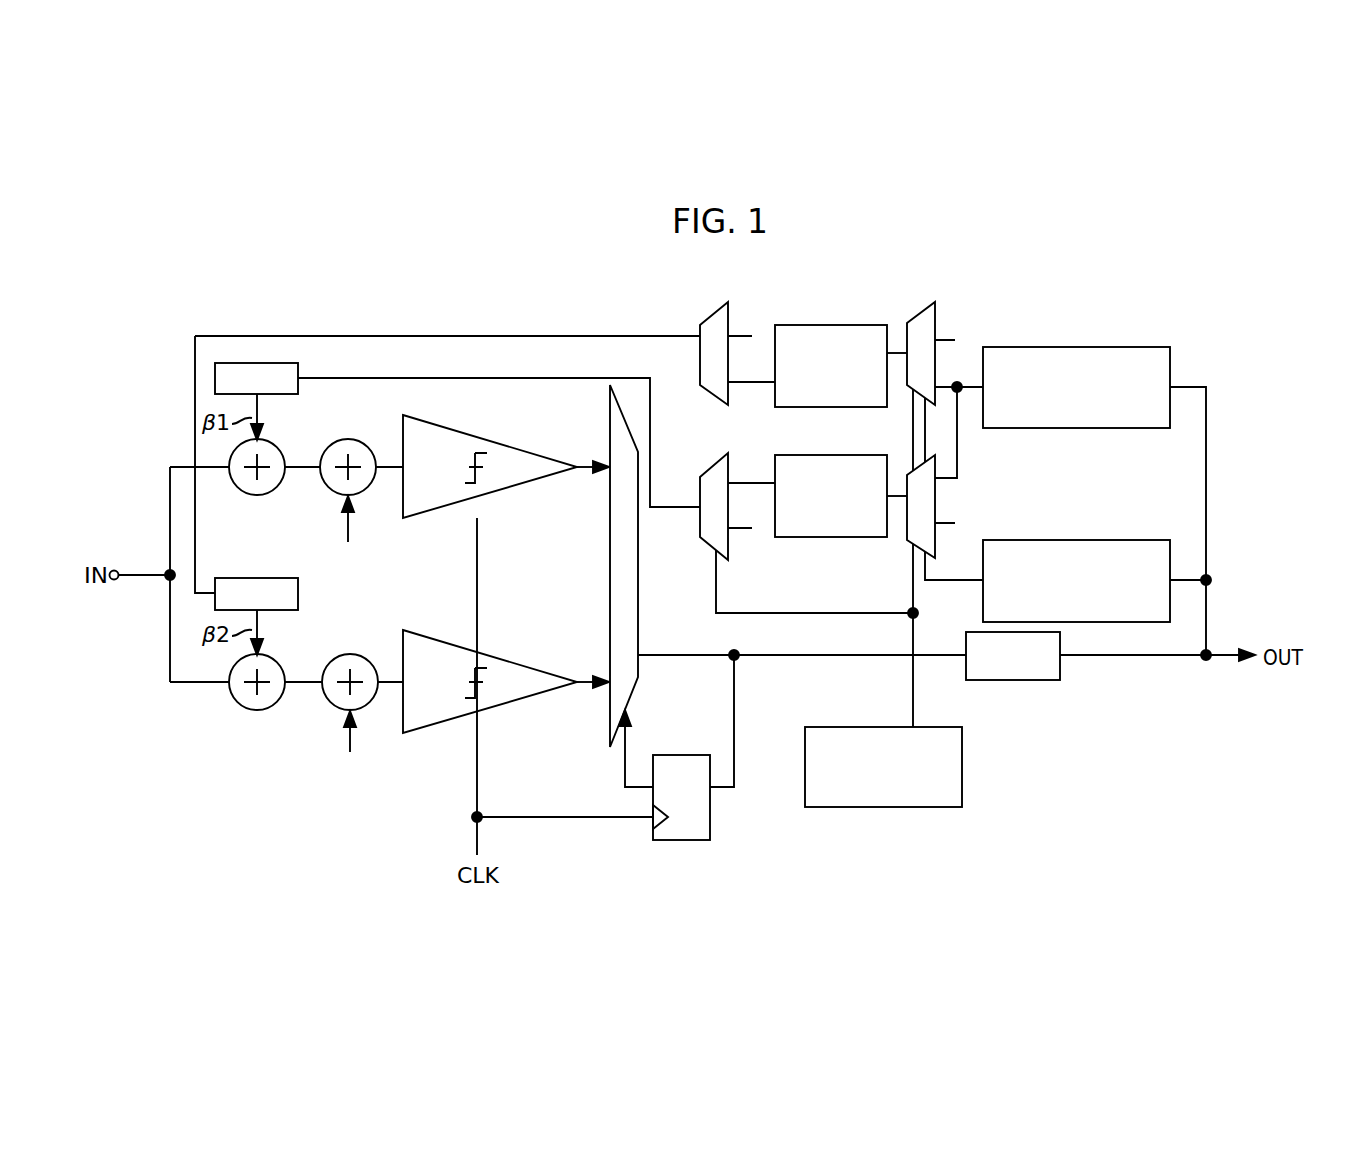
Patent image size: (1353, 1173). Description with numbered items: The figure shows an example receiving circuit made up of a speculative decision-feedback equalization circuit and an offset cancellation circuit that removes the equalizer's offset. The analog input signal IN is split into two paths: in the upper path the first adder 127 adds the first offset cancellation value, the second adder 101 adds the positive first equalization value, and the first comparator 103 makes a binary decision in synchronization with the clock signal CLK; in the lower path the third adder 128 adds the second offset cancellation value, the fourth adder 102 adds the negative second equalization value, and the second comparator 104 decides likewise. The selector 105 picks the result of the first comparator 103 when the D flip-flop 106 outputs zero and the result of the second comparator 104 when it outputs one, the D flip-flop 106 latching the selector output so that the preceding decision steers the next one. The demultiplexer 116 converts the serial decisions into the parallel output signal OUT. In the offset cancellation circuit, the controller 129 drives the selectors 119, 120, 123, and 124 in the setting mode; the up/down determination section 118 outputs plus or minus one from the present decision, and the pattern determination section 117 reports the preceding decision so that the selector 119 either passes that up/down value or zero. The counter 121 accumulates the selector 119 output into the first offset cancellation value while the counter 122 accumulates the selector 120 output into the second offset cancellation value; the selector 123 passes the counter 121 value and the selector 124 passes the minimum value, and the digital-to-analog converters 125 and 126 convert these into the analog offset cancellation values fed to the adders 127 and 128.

The second adder 101 is at (353, 438).
The fourth adder 102 is at (353, 653).
The first comparator 103 is at (506, 445).
The second comparator 104 is at (506, 660).
The selector 105 is at (608, 553).
The D flip-flop 106 is at (680, 840).
The demultiplexer 116 is at (1025, 680).
The pattern determination section 117 is at (1097, 540).
The up/down determination section 118 is at (1095, 347).
The selector 119 is at (905, 543).
The selector 120 is at (913, 318).
The counter 121 is at (838, 454).
The counter 122 is at (838, 324).
The selector 123 is at (698, 526).
The selector 124 is at (698, 345).
The digital-to-analog converter 125 is at (270, 363).
The digital-to-analog converter 126 is at (270, 578).
The first adder 127 is at (254, 496).
The third adder 128 is at (254, 711).
The controller 129 is at (910, 807).